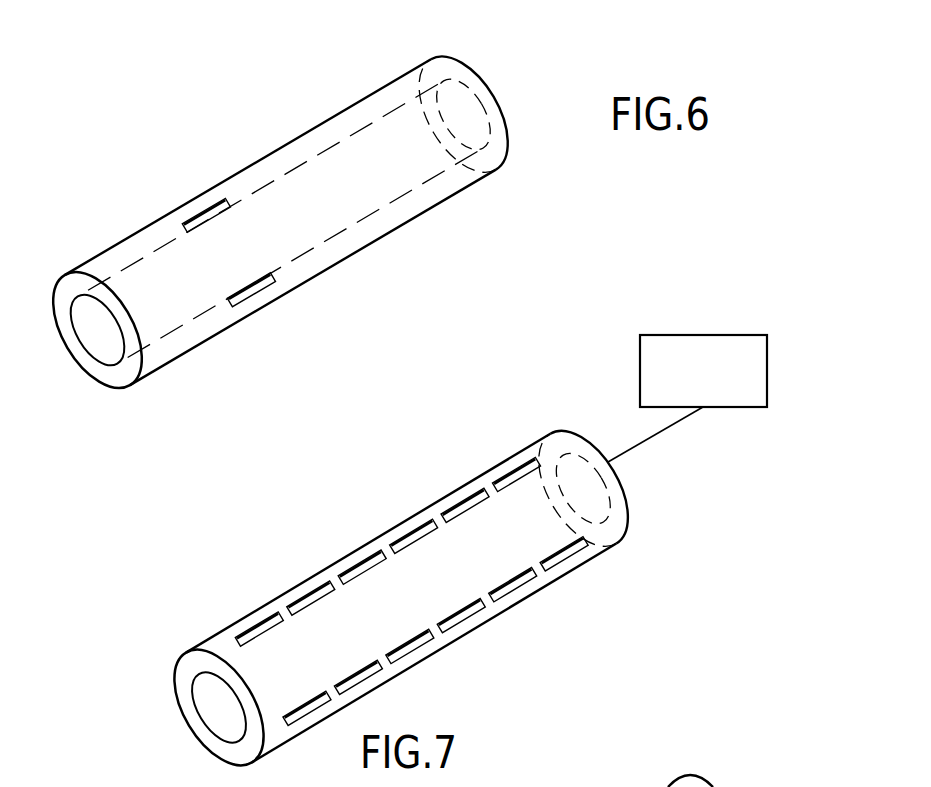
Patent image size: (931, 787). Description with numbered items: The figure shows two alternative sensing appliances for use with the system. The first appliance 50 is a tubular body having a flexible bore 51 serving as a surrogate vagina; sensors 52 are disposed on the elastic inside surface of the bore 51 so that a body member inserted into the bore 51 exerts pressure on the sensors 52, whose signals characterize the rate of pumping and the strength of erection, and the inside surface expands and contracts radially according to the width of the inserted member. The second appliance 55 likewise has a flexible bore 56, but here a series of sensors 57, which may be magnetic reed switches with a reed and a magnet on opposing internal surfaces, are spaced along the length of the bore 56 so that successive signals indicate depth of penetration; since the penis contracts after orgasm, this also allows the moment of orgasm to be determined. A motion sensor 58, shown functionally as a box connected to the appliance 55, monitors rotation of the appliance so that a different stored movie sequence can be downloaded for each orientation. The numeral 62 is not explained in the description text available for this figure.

In FIG. 6, the appliance 50 is at (373, 273).
In FIG. 6, the flexible bore 51 is at (85, 340).
In FIG. 6, the sensors 52 is at (195, 218).
In FIG. 7, the appliance 55 is at (558, 623).
In FIG. 7, the flexible bore 56 is at (210, 698).
In FIG. 7, the sensors 57 is at (322, 592).
In FIG. 7, the motion sensor 58 is at (690, 334).
In FIG. 7, the element 62 is at (680, 786).